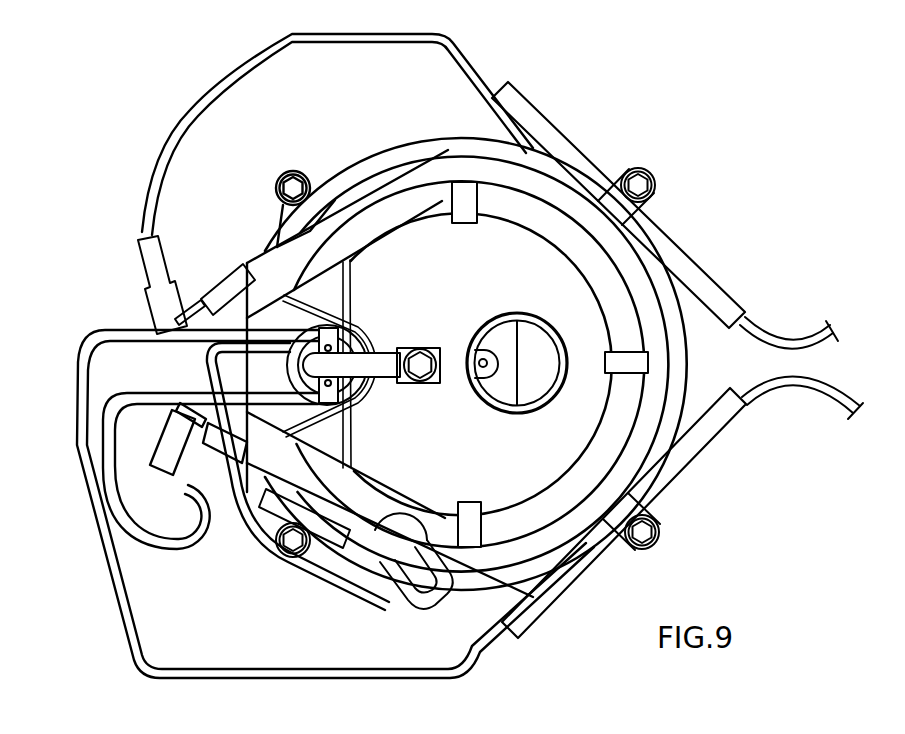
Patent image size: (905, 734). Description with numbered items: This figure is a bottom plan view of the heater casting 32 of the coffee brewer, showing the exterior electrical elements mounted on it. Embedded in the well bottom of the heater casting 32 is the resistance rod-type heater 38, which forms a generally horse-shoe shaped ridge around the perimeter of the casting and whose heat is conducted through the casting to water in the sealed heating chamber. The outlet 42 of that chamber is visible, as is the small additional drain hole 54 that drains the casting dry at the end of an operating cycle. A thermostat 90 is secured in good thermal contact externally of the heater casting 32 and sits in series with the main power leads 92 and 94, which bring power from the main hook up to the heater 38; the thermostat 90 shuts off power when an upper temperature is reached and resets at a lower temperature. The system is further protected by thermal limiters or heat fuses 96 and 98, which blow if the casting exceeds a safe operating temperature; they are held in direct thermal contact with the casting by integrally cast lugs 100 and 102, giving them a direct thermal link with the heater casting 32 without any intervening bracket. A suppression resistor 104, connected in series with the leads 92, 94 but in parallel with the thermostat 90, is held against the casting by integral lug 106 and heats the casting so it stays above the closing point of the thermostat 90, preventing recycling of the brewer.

The heater casting 32 is at (491, 469).
The resistance rod-type heater 38 is at (232, 292).
The outlet 42 is at (545, 378).
The additional drain hole 54 is at (481, 358).
The thermostat 90 is at (350, 330).
The main power lead 92 is at (793, 385).
The main power lead 94 is at (796, 347).
The thermal limiter (heat fuse) 96 is at (592, 558).
The thermal limiter (heat fuse) 98 is at (675, 250).
The integrally cast lug 100 is at (661, 540).
The integrally cast lug 102 is at (638, 168).
The suppression resistor 104 is at (429, 548).
The integral lug 106 is at (317, 557).